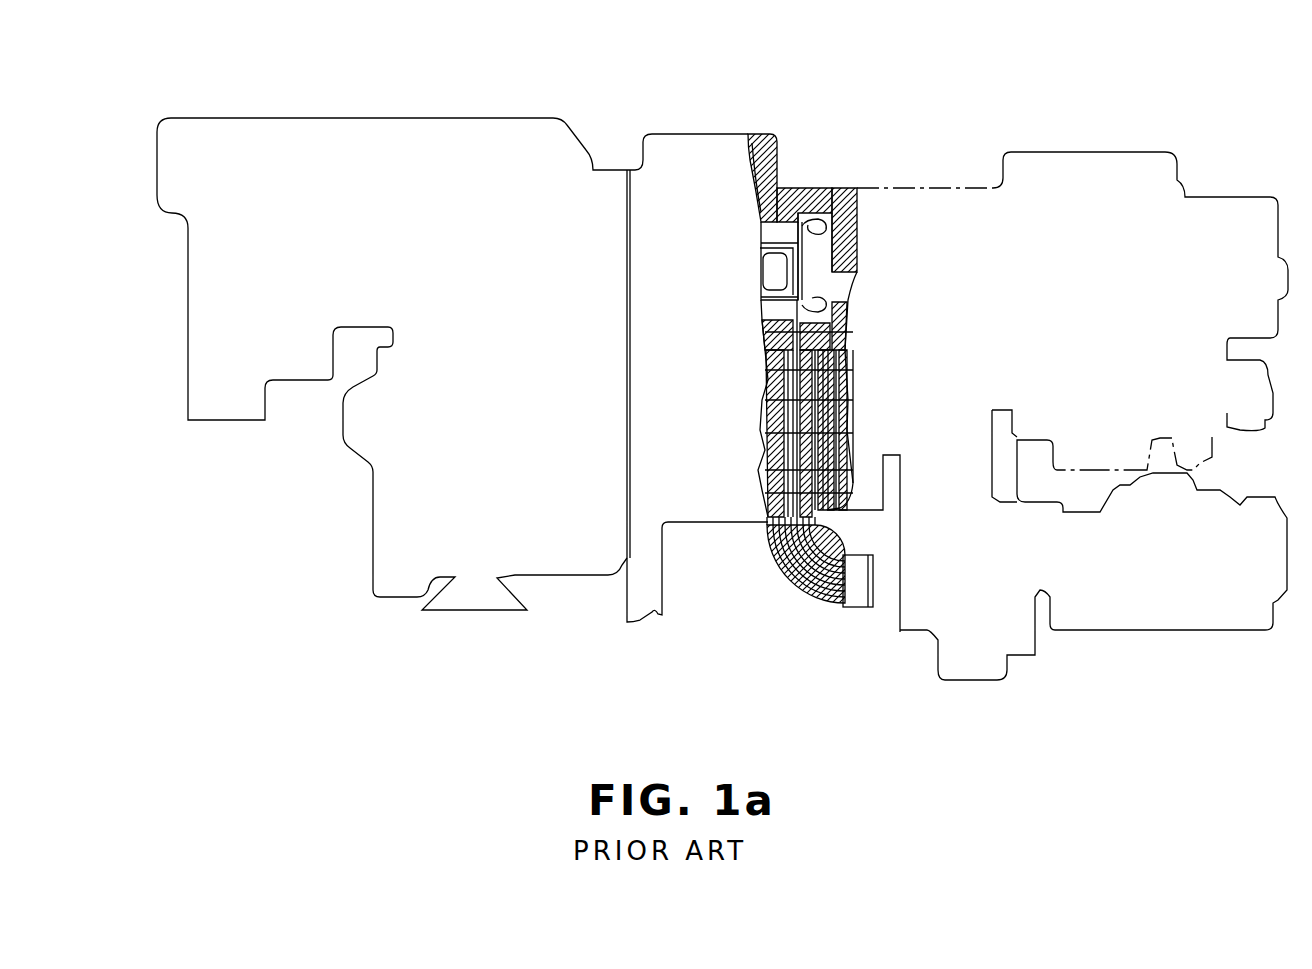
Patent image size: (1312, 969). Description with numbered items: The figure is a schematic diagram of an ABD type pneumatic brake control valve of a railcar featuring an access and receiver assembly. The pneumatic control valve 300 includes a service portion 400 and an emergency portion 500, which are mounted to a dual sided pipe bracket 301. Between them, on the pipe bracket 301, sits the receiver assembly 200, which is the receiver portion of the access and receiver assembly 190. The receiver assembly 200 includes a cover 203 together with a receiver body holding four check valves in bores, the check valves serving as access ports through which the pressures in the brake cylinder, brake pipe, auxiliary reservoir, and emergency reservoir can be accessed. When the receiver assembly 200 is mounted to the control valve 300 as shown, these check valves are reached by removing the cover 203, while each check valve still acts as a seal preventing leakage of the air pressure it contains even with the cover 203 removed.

The emergency portion 500 is at (347, 117).
The pipe bracket 301 is at (687, 133).
The pneumatic control valve 300 is at (870, 359).
The access and receiver assembly 190 is at (800, 187).
The receiver assembly 200 is at (853, 613).
The cover 203 is at (873, 597).
The service portion 400 is at (1097, 151).